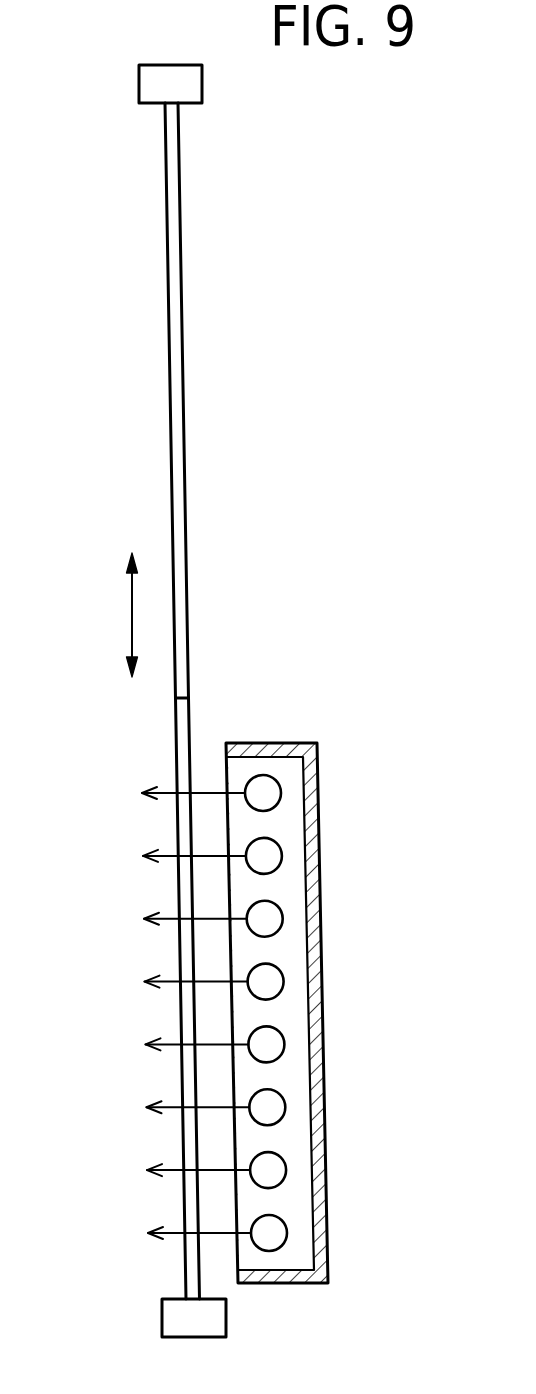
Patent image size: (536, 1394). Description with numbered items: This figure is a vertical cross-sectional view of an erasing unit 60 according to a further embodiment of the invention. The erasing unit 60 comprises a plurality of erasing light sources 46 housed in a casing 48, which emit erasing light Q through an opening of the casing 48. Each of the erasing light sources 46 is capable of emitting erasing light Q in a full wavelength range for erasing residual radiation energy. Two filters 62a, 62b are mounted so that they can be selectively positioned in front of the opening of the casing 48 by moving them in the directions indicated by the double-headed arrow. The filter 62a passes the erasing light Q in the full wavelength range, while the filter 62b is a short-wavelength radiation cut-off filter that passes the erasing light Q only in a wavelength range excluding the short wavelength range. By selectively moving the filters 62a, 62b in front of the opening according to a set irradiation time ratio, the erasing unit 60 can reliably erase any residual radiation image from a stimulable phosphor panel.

The filter 62a is at (184, 461).
The filter 62b is at (188, 1200).
The erasing unit 60 is at (277, 676).
The casing 48 is at (315, 840).
The erasing light sources 46 is at (270, 917).
The erasing light Q is at (171, 793).